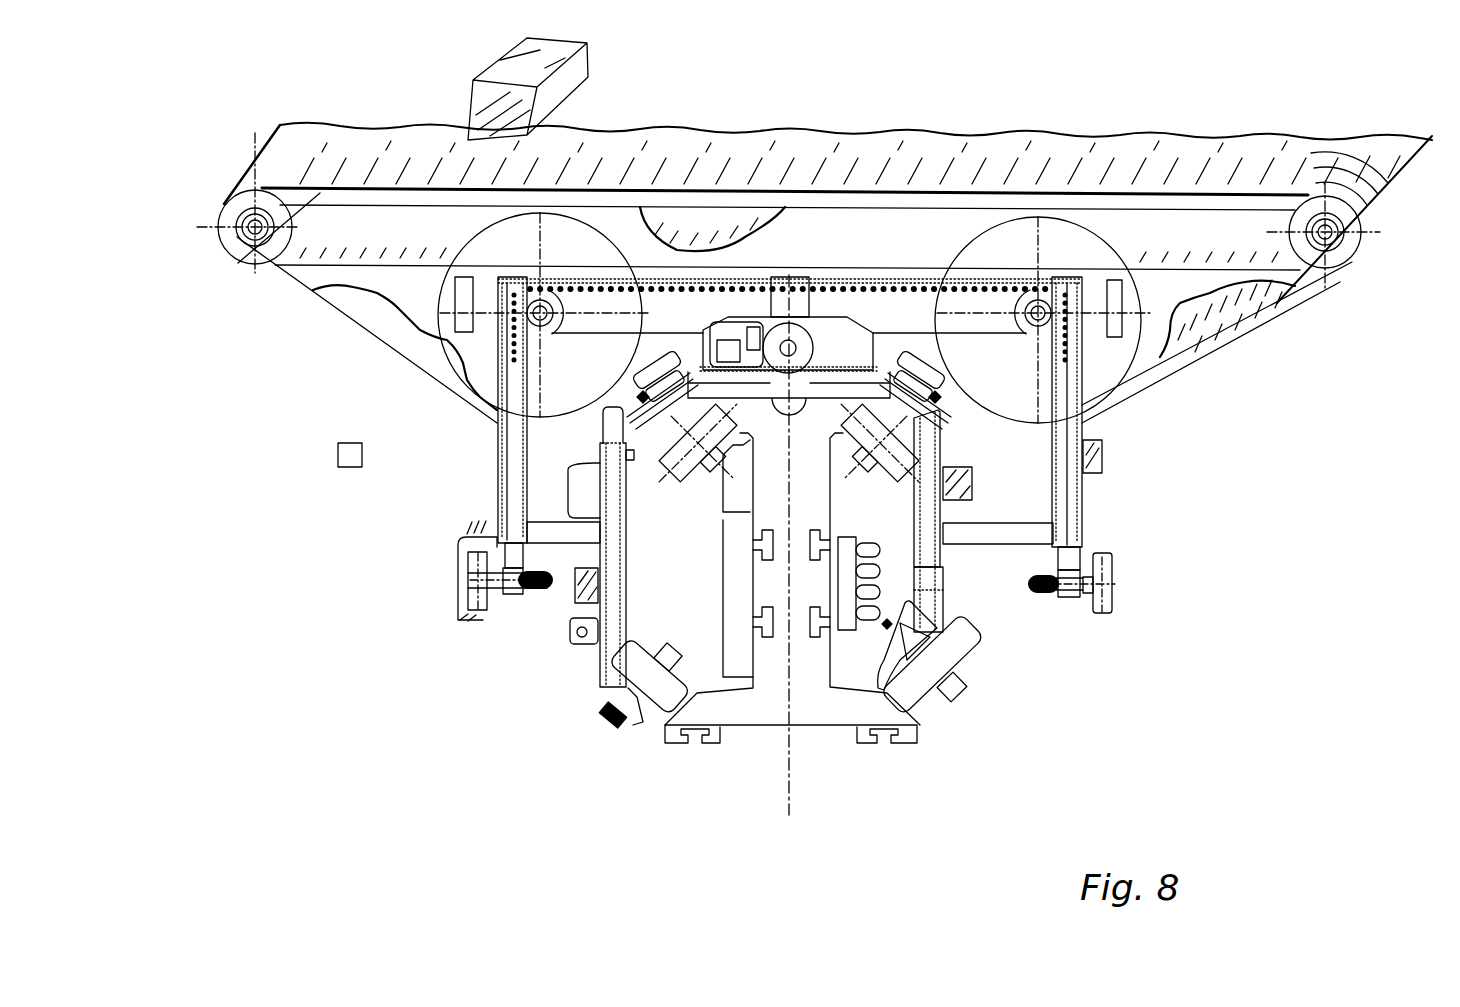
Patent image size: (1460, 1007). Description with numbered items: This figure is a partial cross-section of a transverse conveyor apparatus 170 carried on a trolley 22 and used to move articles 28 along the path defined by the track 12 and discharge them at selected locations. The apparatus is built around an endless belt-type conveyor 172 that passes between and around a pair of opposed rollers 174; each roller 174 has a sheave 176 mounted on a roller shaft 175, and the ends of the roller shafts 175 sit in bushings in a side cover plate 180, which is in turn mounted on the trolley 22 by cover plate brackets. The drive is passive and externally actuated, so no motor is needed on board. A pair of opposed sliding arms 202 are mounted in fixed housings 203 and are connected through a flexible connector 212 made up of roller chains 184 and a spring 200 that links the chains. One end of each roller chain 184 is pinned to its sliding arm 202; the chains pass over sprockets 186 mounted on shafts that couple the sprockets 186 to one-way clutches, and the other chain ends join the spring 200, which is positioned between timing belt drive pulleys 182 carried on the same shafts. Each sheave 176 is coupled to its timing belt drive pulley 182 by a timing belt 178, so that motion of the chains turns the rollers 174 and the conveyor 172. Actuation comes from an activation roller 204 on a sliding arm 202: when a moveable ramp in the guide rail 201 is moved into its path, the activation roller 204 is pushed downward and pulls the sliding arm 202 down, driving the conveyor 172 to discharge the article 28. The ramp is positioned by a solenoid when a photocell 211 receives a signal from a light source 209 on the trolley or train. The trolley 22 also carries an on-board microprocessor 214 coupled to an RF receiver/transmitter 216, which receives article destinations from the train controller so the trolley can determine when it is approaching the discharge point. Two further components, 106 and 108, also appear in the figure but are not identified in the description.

The track 12 is at (825, 724).
The trolley 22 is at (315, 690).
The article 28 is at (590, 52).
The first holder 106 is at (680, 483).
The second holder 108 is at (980, 652).
The transverse conveyor apparatus 170 is at (230, 64).
The endless belt-type conveyor 172 is at (1175, 137).
The roller 174 is at (236, 225).
The roller shaft 175 is at (1330, 250).
The sheave 176 is at (228, 252).
The timing belt 178 is at (270, 262).
The side cover plate 180 is at (680, 220).
The timing belt drive pulley 182 is at (1157, 368).
The roller chain 184 is at (1102, 458).
The sprocket 186 is at (1147, 327).
The spring 200 is at (838, 283).
The guide rail 201 is at (462, 607).
The sliding arm 202 is at (497, 483).
The fixed housing 203 is at (500, 465).
The activation roller 204 is at (487, 608).
The light source 209 is at (571, 464).
The photocell 211 is at (338, 455).
The flexible connector 212 is at (880, 289).
The microprocessor 214 is at (573, 602).
The RF receiver/transmitter 216 is at (977, 482).